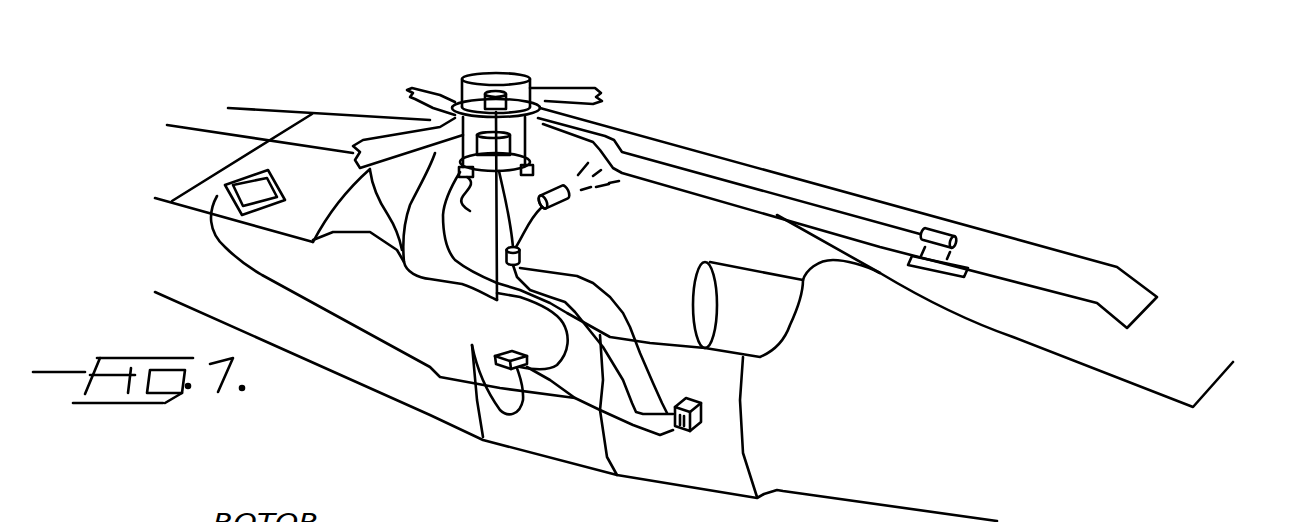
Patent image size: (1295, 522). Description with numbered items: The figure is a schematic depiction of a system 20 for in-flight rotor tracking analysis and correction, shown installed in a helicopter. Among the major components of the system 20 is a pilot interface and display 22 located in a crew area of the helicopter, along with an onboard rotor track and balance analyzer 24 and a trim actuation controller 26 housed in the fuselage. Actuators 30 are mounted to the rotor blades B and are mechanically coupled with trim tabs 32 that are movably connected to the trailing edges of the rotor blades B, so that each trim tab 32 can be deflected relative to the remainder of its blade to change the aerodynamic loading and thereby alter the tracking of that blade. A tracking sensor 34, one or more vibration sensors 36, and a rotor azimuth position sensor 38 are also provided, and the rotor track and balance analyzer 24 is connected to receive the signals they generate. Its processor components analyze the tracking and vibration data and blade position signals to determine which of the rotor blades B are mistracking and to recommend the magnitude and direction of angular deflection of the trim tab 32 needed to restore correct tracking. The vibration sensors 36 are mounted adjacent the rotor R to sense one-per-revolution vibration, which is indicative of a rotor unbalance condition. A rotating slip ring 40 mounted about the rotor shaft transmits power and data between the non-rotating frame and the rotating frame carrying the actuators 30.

The system for in-flight rotor tracking analysis and correction 20 is at (789, 120).
The pilot interface and display 22 is at (280, 189).
The onboard rotor track and balance analyzer 24 is at (701, 412).
The trim actuation controller 26 is at (497, 358).
The actuator 30 is at (944, 220).
The trim tab 32 is at (958, 277).
The tracking sensor 34 is at (565, 200).
The vibration sensor 36 is at (533, 165).
The rotor azimuth position sensor 38 is at (520, 256).
The rotating slip ring 40 is at (496, 95).
The rotor blade B is at (1082, 262).
The rotor R is at (450, 162).